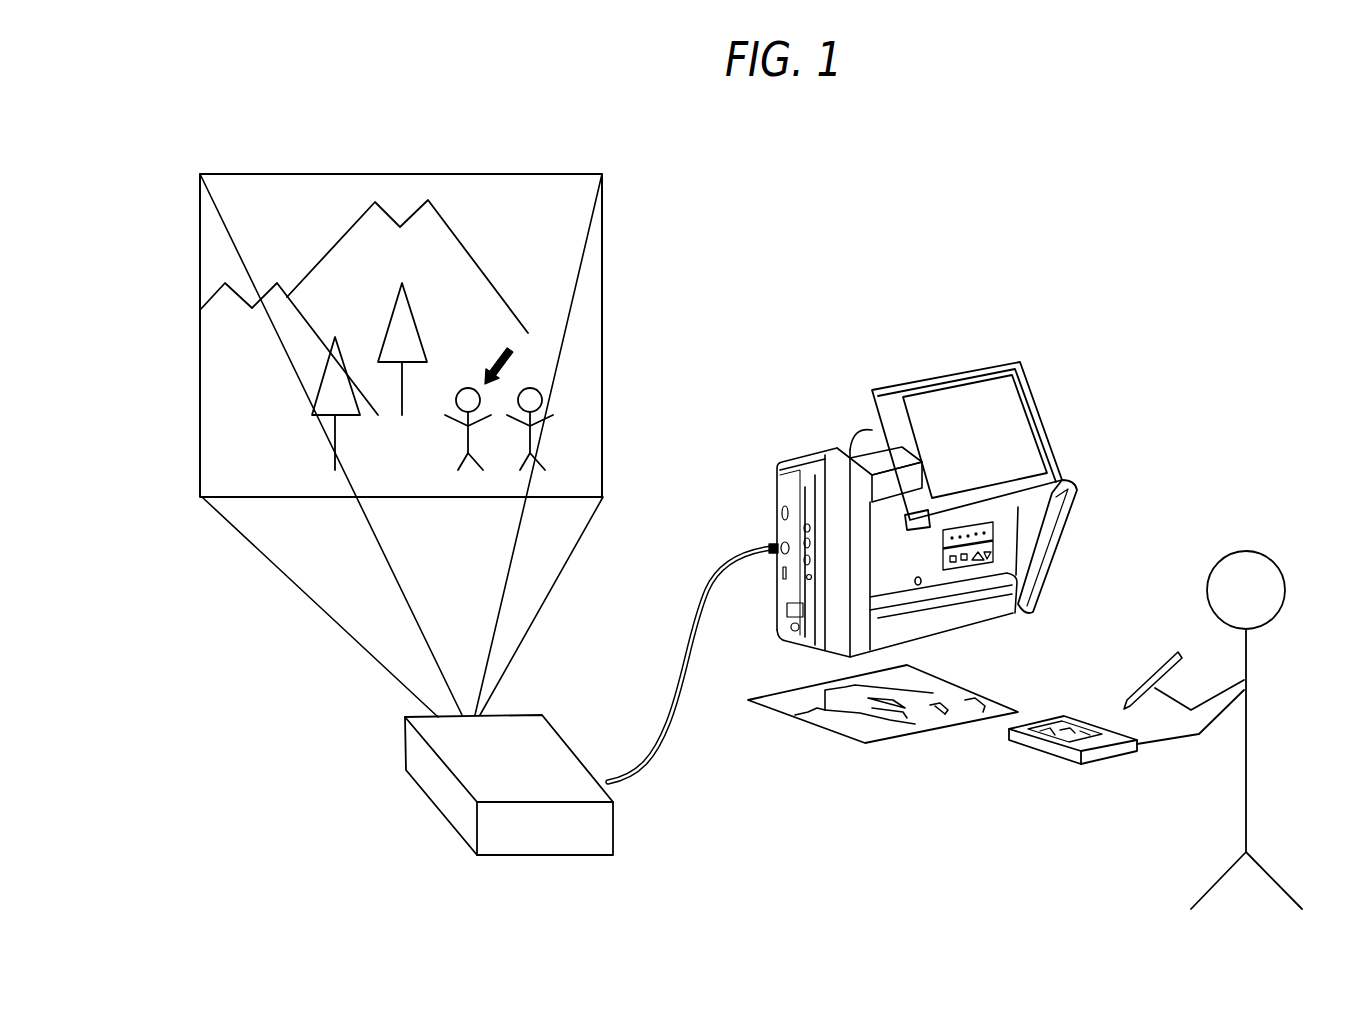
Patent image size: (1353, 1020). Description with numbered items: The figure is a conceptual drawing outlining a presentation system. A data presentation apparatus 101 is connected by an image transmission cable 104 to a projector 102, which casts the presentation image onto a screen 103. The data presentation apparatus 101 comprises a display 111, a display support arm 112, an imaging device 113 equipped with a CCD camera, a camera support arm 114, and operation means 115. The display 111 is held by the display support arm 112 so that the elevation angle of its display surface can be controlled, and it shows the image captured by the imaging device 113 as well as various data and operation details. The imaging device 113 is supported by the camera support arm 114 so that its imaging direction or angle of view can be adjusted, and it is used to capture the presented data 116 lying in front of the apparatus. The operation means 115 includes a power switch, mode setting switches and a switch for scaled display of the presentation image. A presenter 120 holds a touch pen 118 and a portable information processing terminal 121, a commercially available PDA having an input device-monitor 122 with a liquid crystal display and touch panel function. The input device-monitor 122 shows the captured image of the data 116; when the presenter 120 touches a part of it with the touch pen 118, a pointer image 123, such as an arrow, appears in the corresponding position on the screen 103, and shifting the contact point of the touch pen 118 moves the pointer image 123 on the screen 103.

The data presentation apparatus 101 is at (941, 471).
The projector 102 is at (447, 798).
The screen 103 is at (546, 192).
The image transmission cable 104 is at (672, 727).
The display 111 is at (1013, 437).
The display support arm 112 is at (1050, 527).
The imaging device 113 is at (846, 450).
The camera support arm 114 is at (838, 523).
The operation means 115 is at (1005, 555).
The presented data 116 is at (857, 728).
The touch pen 118 is at (1156, 667).
The presenter 120 is at (1257, 525).
The portable information processing terminal 121 is at (1094, 731).
The input device-monitor 122 is at (1058, 704).
The pointer image 123 is at (512, 360).